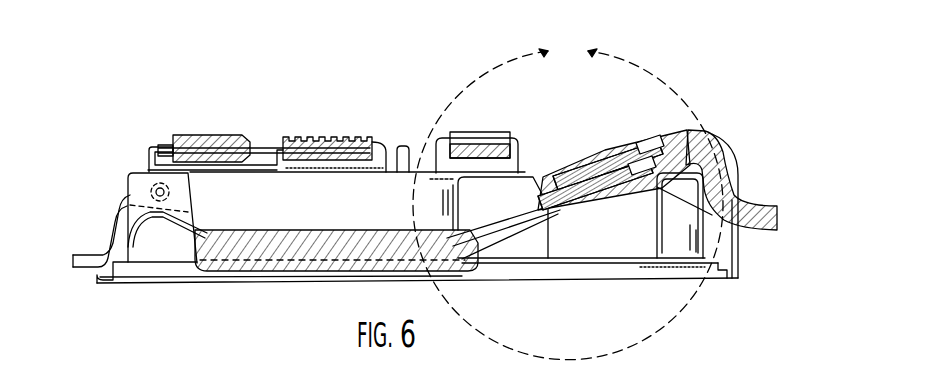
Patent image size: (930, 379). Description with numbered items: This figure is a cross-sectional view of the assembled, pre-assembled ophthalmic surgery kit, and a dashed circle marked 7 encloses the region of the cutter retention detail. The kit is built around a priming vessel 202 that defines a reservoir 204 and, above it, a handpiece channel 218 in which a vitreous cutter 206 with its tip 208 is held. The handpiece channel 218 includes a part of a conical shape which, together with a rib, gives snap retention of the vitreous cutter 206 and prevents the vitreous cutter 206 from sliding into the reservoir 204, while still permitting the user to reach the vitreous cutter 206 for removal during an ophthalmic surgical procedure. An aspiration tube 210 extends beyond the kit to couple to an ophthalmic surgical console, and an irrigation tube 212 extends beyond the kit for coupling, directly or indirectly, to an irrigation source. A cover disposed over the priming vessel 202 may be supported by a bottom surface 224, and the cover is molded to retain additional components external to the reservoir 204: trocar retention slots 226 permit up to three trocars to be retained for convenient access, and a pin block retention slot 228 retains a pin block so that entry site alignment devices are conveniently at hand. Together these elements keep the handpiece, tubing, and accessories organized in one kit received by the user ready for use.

The detail view circle for FIG. 7 is at (568, 198).
The priming vessel 202 is at (667, 272).
The reservoir 204 is at (305, 210).
The vitreous cutter 206 is at (614, 150).
The tip 208 is at (487, 260).
The aspiration tube 210 is at (758, 208).
The irrigation tube 212 is at (84, 256).
The handpiece channel 218 is at (622, 205).
The bottom surface 224 is at (173, 281).
The trocar retention slots 226 is at (217, 140).
The pin block retention slot 228 is at (483, 152).